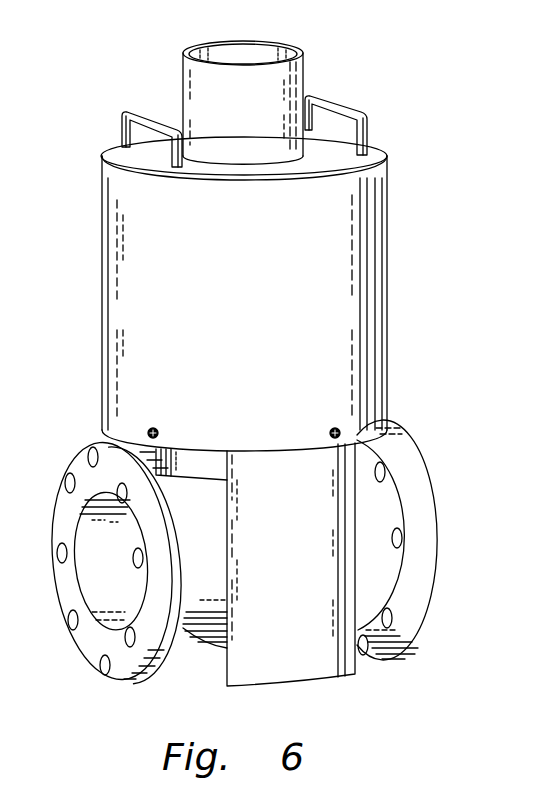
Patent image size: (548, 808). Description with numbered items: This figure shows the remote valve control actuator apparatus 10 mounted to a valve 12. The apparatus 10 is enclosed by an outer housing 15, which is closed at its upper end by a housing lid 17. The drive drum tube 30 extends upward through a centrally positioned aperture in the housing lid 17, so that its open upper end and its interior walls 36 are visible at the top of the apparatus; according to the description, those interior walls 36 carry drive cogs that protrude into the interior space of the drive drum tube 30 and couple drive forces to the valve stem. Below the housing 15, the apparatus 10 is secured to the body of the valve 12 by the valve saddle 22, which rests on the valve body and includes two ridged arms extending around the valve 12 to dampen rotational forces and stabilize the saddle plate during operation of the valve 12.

The remote valve control actuator apparatus 10 is at (428, 320).
The valve 12 is at (133, 683).
The outer housing 15 is at (388, 233).
The housing lid 17 is at (372, 146).
The valve saddle 22 is at (328, 662).
The drive drum tube 30 is at (237, 87).
The interior walls of the drive tube 36 is at (272, 43).